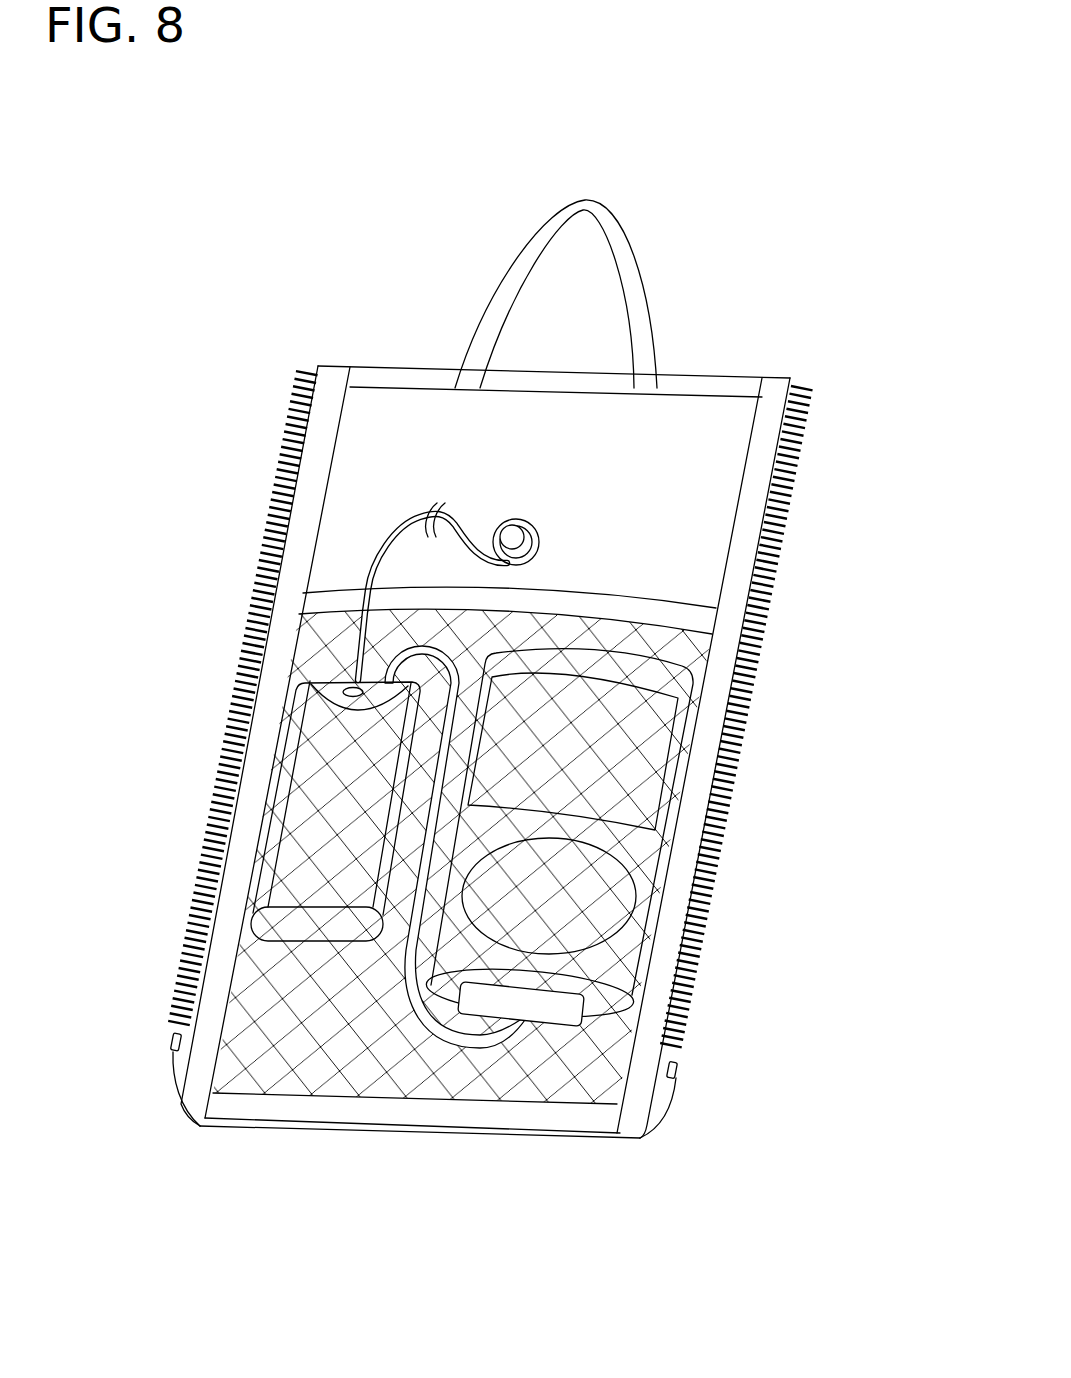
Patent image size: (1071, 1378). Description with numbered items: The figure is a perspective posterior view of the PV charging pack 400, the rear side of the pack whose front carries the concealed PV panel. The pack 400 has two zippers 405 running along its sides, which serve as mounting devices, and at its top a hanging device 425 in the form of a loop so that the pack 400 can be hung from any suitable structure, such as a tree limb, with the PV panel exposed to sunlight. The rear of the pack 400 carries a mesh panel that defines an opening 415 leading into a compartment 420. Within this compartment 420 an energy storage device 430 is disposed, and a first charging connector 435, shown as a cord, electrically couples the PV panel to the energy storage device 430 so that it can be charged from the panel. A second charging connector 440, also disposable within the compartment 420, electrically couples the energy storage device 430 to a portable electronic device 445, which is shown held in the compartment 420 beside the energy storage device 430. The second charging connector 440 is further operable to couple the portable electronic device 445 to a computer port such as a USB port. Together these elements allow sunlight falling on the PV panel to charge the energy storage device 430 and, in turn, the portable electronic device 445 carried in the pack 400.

The PV charging pack 400 is at (186, 1150).
The zippers 405 is at (292, 410).
The opening 415 is at (612, 577).
The compartment 420 is at (348, 1055).
The hanging device 425 is at (598, 205).
The energy storage device 430 is at (287, 770).
The first charging connector 435 is at (410, 520).
The second charging connector 440 is at (474, 1046).
The portable electronic device 445 is at (641, 864).